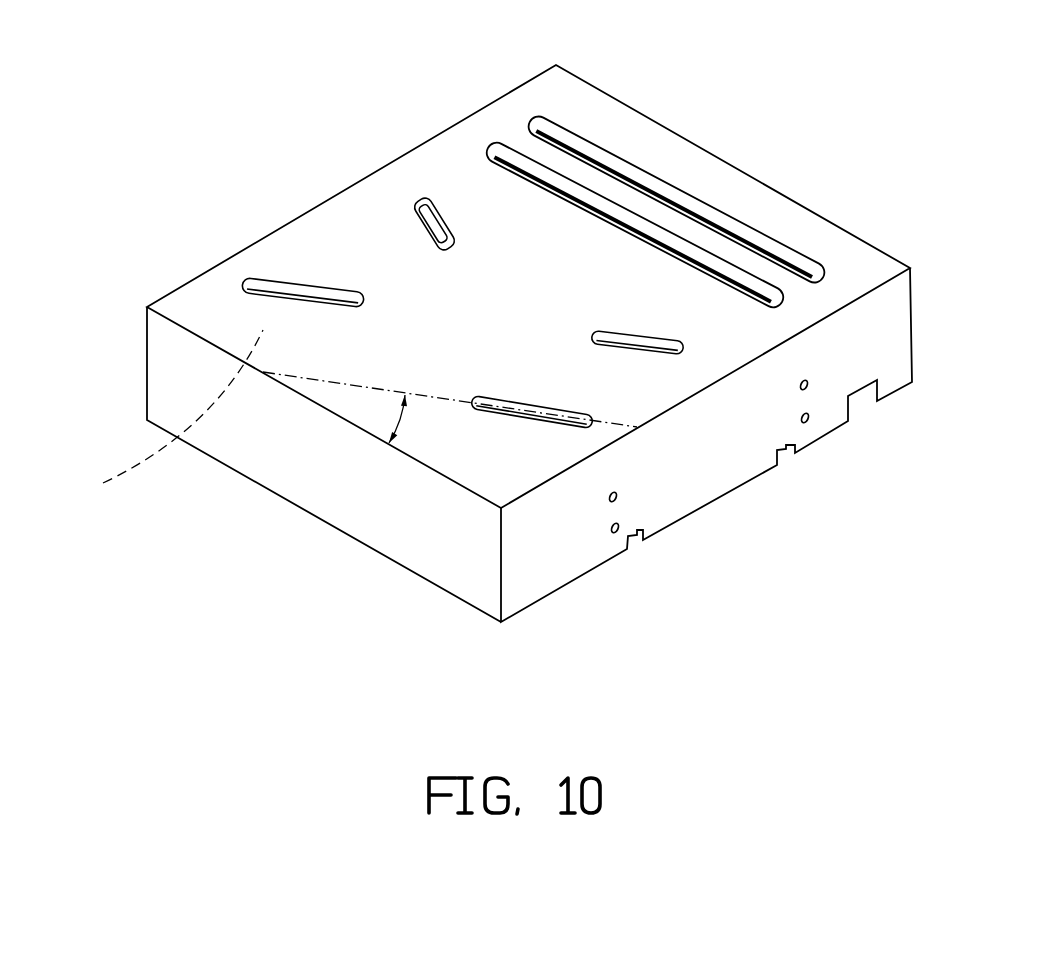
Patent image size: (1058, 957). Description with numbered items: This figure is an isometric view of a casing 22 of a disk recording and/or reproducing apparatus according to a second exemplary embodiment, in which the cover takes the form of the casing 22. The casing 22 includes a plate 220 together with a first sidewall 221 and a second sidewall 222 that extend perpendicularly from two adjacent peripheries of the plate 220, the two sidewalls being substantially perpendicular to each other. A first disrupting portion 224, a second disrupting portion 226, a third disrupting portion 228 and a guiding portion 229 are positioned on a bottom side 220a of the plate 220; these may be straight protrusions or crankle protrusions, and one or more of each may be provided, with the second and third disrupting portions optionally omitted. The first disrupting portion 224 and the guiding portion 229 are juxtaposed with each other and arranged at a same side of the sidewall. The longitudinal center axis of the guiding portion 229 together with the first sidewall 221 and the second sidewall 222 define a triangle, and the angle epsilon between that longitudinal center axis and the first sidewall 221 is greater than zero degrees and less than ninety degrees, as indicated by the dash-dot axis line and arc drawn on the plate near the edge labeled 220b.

The casing 22 is at (637, 85).
The plate 220 is at (767, 222).
The bottom side of the plate 220a is at (147, 413).
The second edge of plate 220b is at (447, 448).
The first sidewall 221 is at (433, 562).
The second sidewall 222 is at (527, 570).
The first disrupting portion 224 is at (265, 285).
The second disrupting portion 226 is at (418, 203).
The third disrupting portion 228 is at (655, 343).
The guiding portion 229 is at (558, 423).